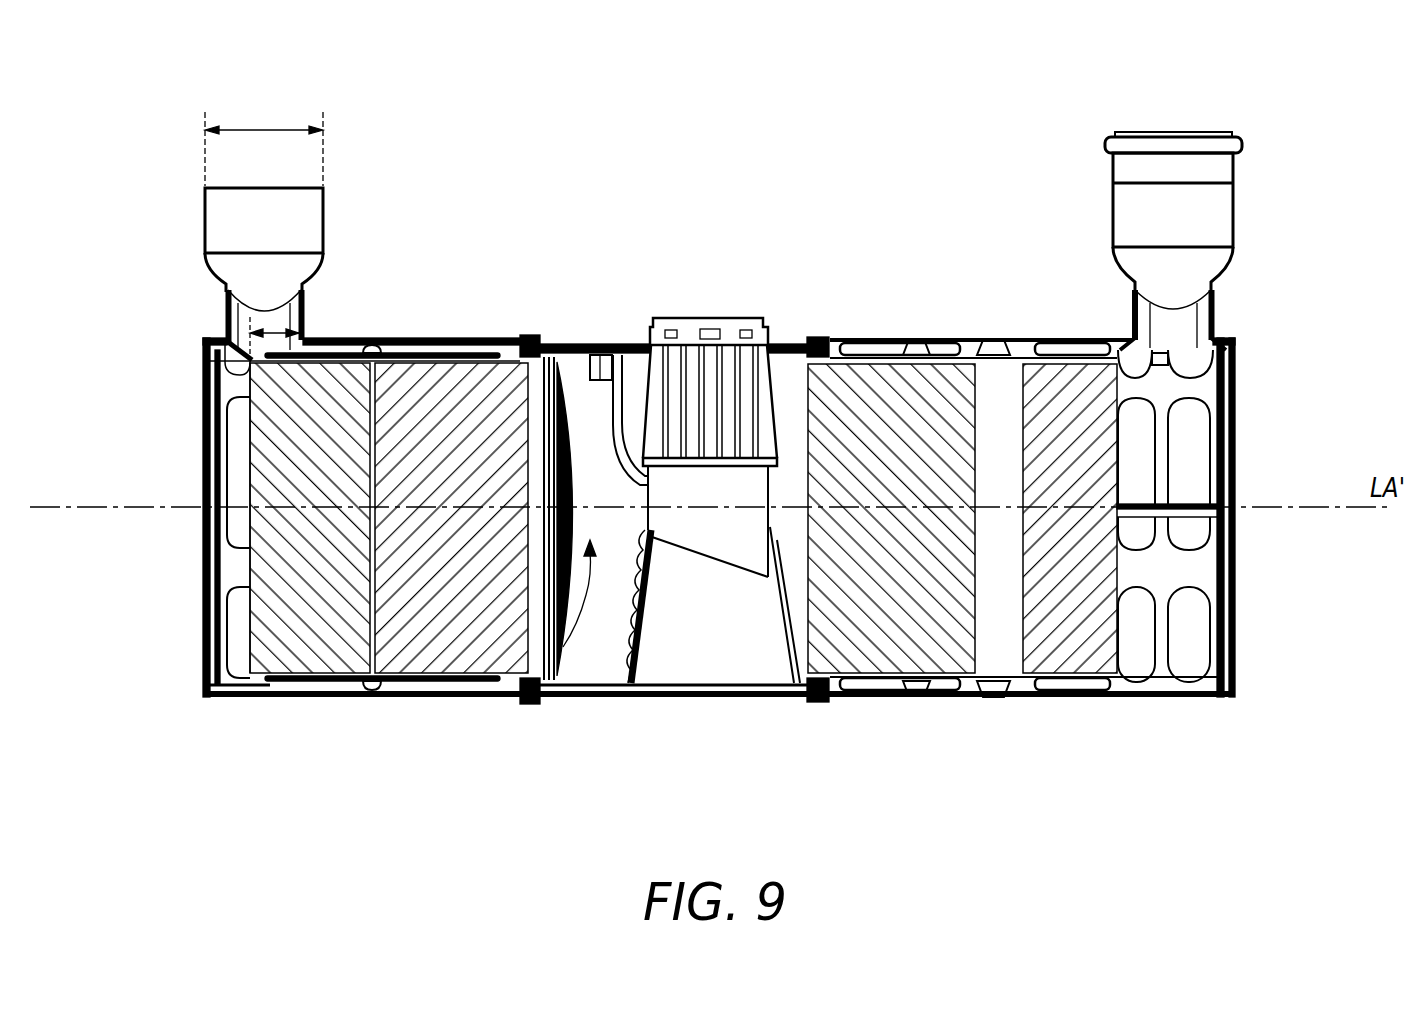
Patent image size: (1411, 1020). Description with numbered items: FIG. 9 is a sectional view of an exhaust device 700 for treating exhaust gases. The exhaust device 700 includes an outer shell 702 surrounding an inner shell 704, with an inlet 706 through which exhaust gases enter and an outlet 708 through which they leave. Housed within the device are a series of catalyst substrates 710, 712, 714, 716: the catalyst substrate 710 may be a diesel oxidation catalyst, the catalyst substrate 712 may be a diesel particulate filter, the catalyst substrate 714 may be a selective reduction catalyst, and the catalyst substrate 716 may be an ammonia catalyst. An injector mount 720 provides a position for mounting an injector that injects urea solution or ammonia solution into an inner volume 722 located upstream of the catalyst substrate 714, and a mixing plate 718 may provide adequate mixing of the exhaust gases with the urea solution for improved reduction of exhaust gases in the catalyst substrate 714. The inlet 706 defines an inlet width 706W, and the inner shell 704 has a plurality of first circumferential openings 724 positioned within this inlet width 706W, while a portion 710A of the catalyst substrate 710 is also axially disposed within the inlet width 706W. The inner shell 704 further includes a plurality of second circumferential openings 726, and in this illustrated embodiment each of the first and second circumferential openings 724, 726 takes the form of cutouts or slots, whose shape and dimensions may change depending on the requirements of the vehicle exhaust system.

The exhaust device 700 is at (1008, 52).
The outer shell 702 is at (470, 343).
The inner shell 704 is at (398, 345).
The inlet 706 is at (327, 218).
The inlet width 706W is at (270, 127).
The outlet 708 is at (1235, 207).
The catalyst substrate 710 is at (313, 658).
The portion of the catalyst substrate 710A is at (226, 313).
The catalyst substrate 712 is at (450, 650).
The catalyst substrate 714 is at (893, 657).
The catalyst substrate 716 is at (1063, 655).
The mixing plate 718 is at (633, 575).
The injector mount 720 is at (714, 318).
The inner volume 722 is at (530, 705).
The first circumferential openings 724 is at (235, 457).
The second circumferential openings 726 is at (1138, 460).